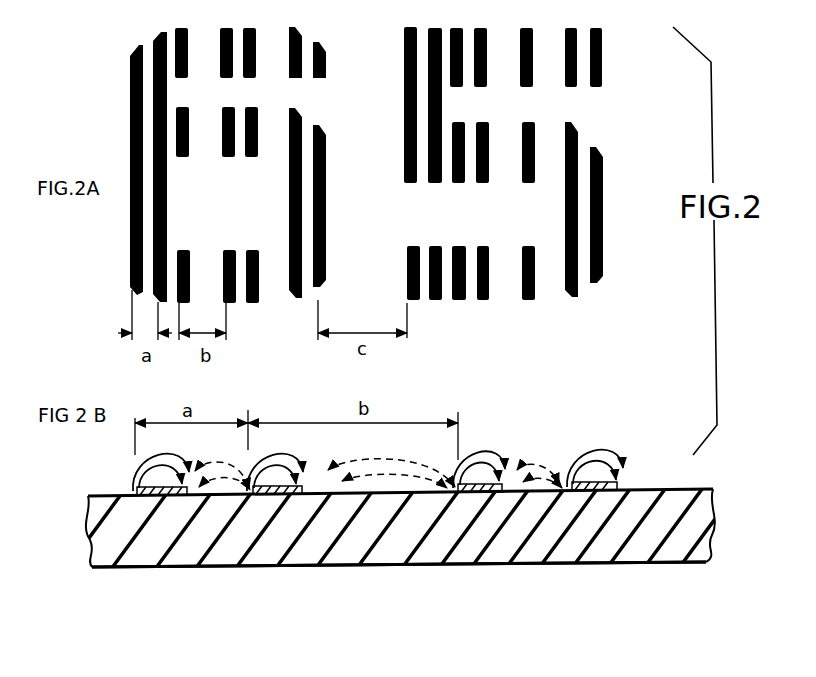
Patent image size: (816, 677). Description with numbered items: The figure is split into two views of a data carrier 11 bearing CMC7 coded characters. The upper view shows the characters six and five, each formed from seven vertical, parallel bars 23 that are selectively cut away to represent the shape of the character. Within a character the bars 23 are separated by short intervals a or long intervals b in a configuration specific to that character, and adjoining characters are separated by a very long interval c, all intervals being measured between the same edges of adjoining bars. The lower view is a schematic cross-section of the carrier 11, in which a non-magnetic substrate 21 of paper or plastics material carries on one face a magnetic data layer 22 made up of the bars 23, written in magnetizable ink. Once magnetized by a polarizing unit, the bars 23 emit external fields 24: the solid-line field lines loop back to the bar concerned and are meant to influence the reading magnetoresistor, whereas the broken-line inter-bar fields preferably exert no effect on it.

In FIG. 2B, the data carrier 11 is at (214, 581).
In FIG. 2B, the non-magnetic substrate 21 is at (88, 517).
In FIG. 2B, the magnetic data layer 22 is at (118, 484).
In FIG. 2A, the bars 23 is at (129, 72).
In FIG. 2B, the bars 23 is at (298, 467).
In FIG. 2B, the external fields 24 is at (407, 461).